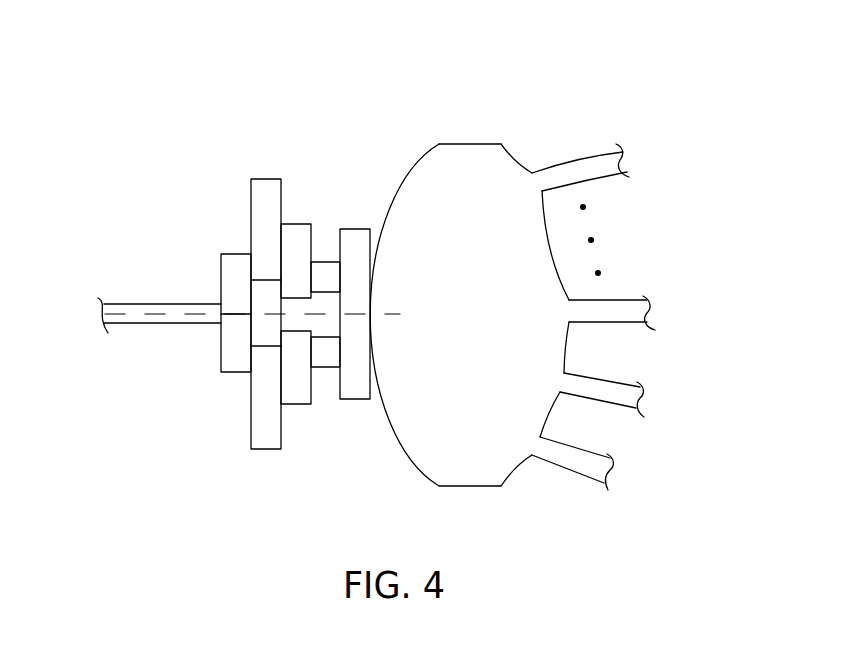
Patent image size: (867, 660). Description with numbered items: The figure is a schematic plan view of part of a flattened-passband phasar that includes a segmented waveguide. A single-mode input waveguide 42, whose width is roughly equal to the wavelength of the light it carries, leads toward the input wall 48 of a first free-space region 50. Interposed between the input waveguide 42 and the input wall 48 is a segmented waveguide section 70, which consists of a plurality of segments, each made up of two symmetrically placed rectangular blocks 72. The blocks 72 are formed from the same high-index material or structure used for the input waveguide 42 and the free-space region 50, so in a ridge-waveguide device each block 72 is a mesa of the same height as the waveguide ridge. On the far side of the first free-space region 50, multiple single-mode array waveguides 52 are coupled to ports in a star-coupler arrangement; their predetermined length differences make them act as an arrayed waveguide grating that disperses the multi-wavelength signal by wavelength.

The single-mode input waveguide 42 is at (153, 305).
The input wall 48 is at (401, 446).
The first free-space region 50 is at (475, 155).
The array waveguides 52 is at (590, 162).
The segmented waveguide section 70 is at (292, 321).
The rectangular blocks 72 is at (265, 432).